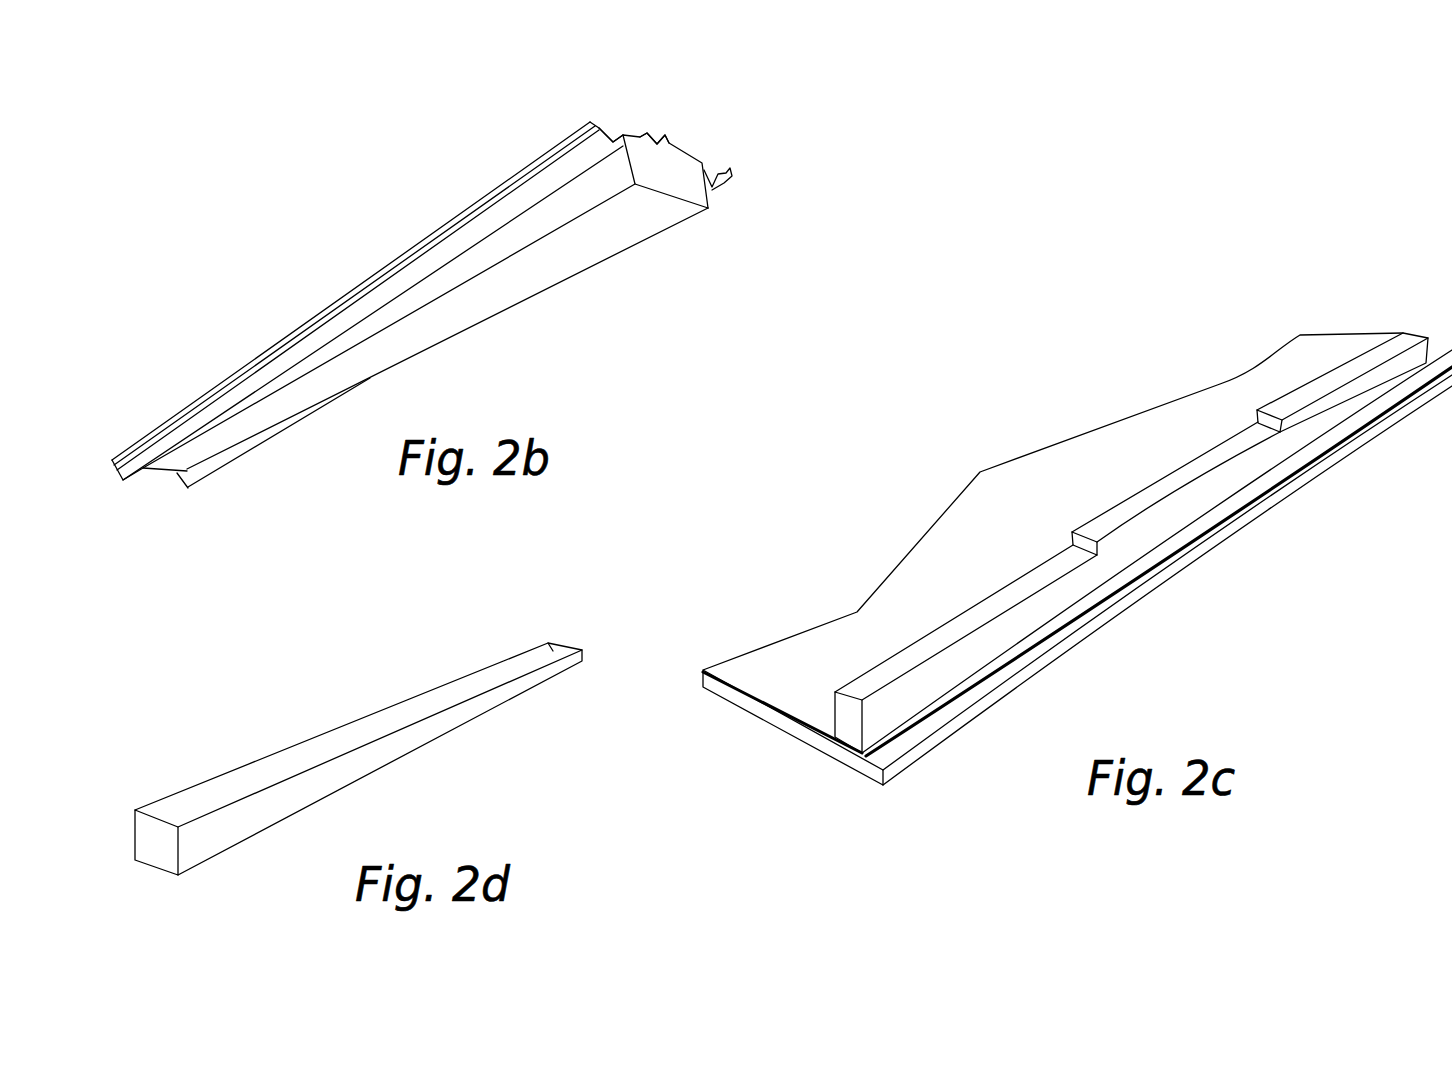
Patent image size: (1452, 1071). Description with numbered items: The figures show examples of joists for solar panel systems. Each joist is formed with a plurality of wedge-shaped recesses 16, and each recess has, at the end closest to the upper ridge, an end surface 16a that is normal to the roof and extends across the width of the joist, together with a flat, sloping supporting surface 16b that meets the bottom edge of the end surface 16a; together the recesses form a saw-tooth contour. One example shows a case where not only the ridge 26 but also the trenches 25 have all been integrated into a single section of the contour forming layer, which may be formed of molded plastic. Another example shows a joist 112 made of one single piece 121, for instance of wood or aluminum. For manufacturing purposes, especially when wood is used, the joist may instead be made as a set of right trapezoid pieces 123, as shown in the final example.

In FIG. 2C, the wedge-shaped recess 16 is at (1143, 531).
In FIG. 2C, the end surface 16a is at (1087, 548).
In FIG. 2C, the sloping supporting surface 16b is at (923, 653).
In FIG. 2B, the trench 25 is at (613, 141).
In FIG. 2B, the ridge 26 is at (658, 137).
In FIG. 2C, the joist 112 is at (1418, 326).
In FIG. 2C, the single piece 121 is at (1313, 413).
In FIG. 2D, the right trapezoid piece 123 is at (235, 785).